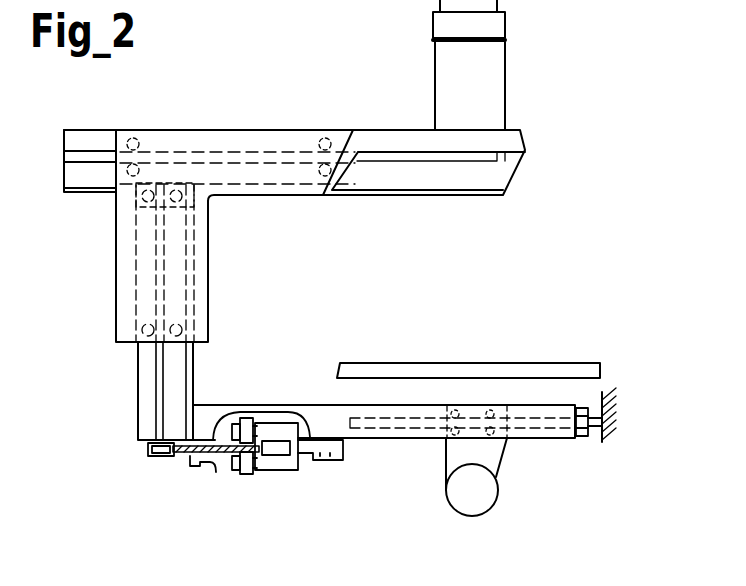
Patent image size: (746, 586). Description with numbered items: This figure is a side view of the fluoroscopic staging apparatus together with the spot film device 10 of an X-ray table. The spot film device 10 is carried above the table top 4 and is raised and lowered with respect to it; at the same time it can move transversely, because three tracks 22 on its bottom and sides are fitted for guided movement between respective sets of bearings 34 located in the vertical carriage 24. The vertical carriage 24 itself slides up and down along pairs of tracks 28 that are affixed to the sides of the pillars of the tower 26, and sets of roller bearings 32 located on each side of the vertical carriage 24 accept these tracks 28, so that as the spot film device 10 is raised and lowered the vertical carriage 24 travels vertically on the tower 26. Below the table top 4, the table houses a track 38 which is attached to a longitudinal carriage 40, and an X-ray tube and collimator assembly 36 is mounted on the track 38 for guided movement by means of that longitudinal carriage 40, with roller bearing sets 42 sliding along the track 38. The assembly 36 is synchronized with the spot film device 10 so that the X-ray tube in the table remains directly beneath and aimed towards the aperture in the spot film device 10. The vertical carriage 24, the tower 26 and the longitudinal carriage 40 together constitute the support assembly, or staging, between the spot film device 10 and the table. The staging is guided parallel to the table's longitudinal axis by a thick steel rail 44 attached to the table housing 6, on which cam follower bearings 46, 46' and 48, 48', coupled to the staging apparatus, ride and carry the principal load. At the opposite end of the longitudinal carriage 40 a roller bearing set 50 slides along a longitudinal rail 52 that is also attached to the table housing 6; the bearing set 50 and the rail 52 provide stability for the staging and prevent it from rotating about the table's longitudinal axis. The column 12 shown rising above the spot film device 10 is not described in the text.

The table top 4 is at (350, 363).
The table housing 6 is at (206, 470).
The spot film device 10 is at (388, 130).
The support column 12 is at (500, 93).
The tracks 22 is at (513, 138).
The vertical carriage 24 is at (207, 276).
The tower 26 is at (138, 408).
The tracks 28 is at (160, 362).
The roller bearings 32 is at (186, 212).
The bearings 34 is at (133, 138).
The X-ray tube and collimator assembly 36 is at (500, 470).
The track 38 is at (375, 432).
The longitudinal carriage 40 is at (418, 440).
The roller bearing sets 42 is at (455, 412).
The rail 44 is at (178, 457).
The cam follower bearing 46 is at (125, 453).
The cam follower bearing 46' is at (299, 471).
The cam follower bearing 48 is at (261, 402).
The cam follower bearing 48' is at (233, 492).
The roller bearing set 50 is at (600, 408).
The longitudinal rail 52 is at (597, 440).